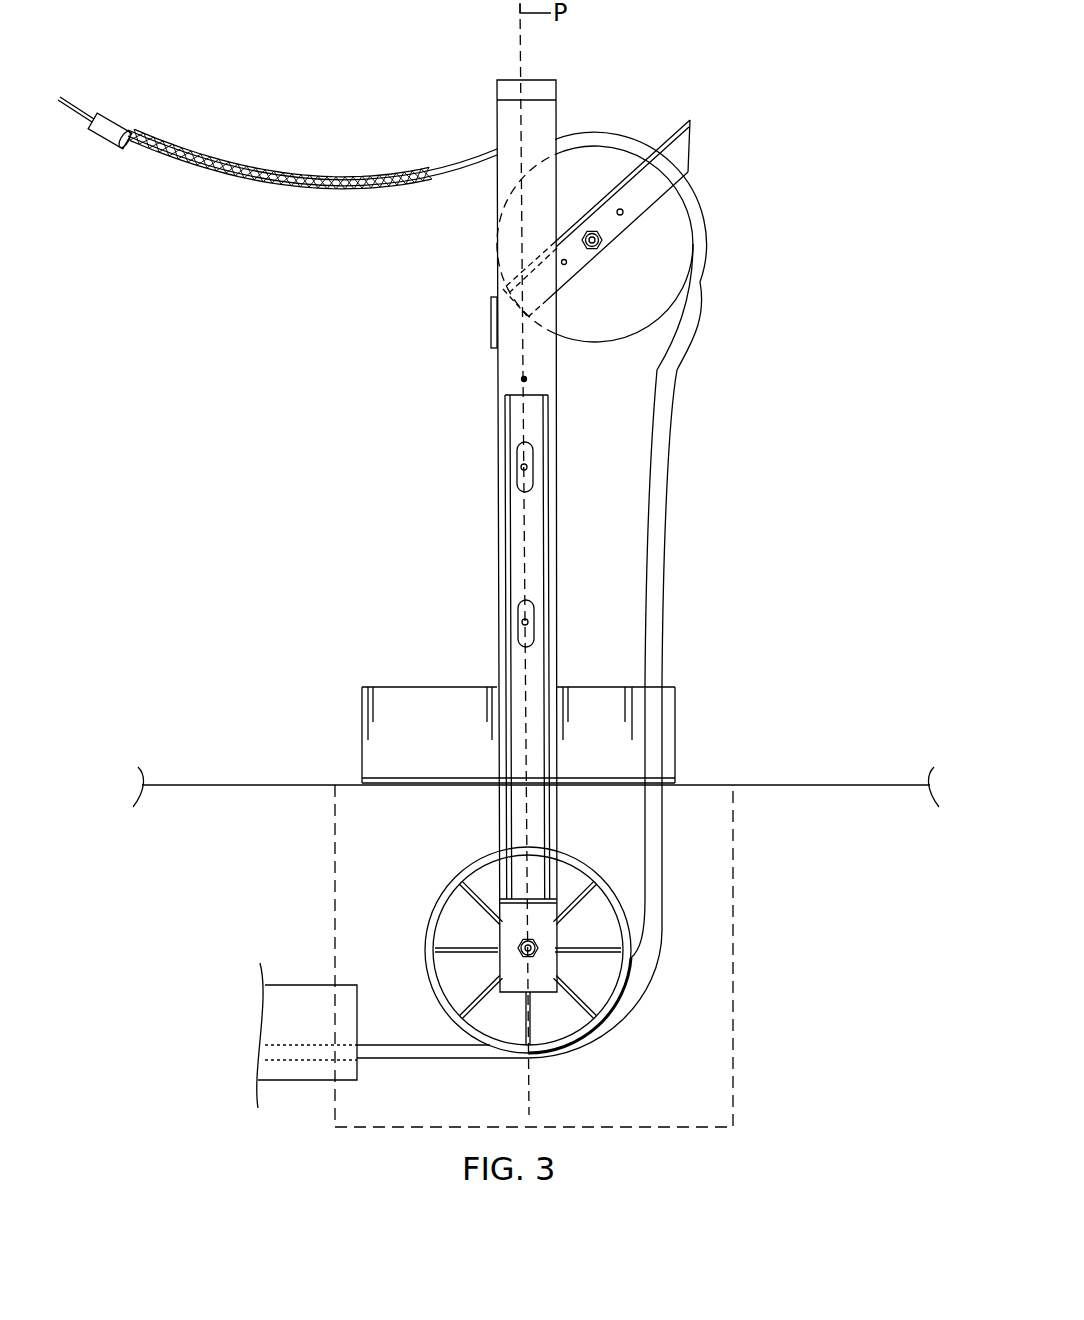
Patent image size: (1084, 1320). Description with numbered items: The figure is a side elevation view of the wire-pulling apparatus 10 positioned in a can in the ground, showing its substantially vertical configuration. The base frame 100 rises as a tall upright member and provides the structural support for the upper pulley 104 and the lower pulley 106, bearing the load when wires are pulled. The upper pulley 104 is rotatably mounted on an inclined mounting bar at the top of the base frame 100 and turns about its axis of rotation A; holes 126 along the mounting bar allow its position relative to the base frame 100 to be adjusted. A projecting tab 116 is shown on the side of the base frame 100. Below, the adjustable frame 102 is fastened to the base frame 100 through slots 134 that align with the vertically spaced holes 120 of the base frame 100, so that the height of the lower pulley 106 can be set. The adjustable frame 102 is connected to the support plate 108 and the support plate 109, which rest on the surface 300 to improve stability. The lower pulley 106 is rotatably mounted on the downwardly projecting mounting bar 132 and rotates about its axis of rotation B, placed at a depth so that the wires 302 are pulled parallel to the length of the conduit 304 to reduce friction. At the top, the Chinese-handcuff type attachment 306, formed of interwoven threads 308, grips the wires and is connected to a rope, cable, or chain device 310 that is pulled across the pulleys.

The apparatus 10 is at (582, 1060).
The base frame 100 is at (497, 112).
The adjustable frame 102 is at (505, 408).
The upper pulley 104 is at (598, 153).
The lower pulley 106 is at (433, 950).
The support plate 108 is at (383, 763).
The support plate 109 is at (610, 787).
The stop tab 116 is at (491, 339).
The holes 120 is at (530, 467).
The holes 126 is at (627, 213).
The mounting bar 132 is at (543, 970).
The slots 134 is at (518, 452).
The surface 300 is at (188, 783).
The wires 302 is at (405, 1052).
The conduit 304 is at (288, 998).
The attachment 306 is at (184, 124).
The threads 308 is at (310, 173).
The device 310 is at (75, 122).
The axis of rotation A is at (599, 247).
The axis of rotation B is at (530, 957).